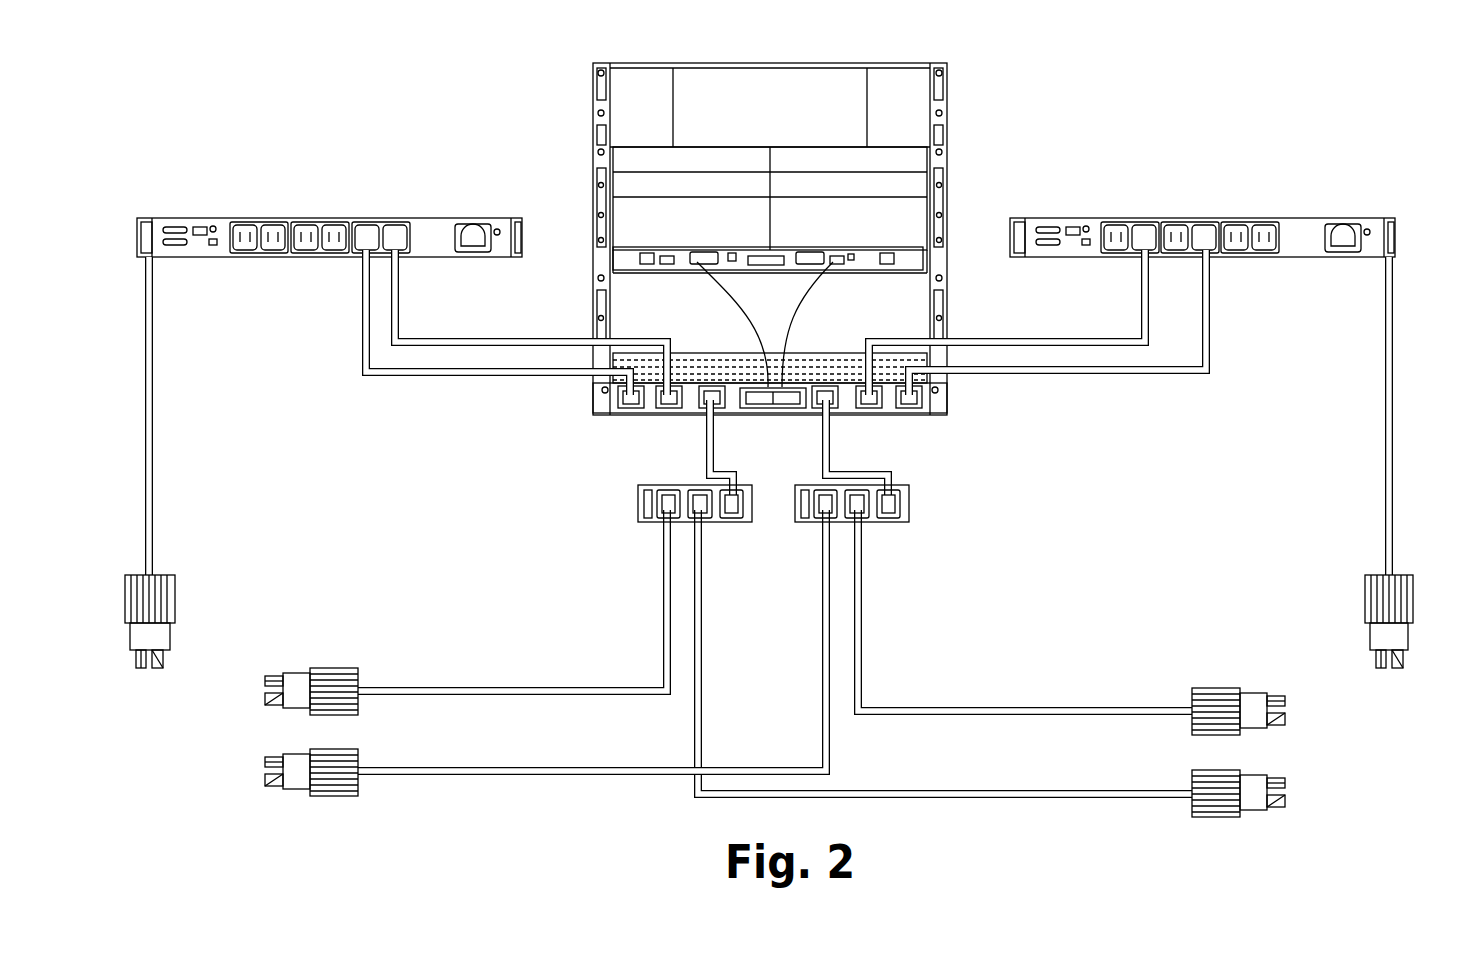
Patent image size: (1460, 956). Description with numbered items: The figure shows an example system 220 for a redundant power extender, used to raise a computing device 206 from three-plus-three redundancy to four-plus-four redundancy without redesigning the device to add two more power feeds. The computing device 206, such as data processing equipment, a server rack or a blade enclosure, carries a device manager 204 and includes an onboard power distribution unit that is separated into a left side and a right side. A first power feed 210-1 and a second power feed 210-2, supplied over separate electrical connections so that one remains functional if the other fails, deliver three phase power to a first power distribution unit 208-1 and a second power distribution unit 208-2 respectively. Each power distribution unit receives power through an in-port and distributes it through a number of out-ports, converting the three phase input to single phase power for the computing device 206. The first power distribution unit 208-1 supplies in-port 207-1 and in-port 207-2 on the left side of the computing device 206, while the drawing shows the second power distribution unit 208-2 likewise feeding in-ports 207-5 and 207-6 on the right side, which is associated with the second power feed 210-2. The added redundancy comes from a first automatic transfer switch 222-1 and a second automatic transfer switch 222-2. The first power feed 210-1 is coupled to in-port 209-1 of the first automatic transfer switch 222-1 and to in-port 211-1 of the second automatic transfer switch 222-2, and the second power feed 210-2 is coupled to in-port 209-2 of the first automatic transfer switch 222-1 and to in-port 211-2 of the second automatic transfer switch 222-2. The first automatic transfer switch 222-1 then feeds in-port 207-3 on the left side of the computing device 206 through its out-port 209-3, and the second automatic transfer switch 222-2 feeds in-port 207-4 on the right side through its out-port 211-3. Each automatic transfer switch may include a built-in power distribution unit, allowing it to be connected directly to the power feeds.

The system 220 is at (1094, 73).
The device manager 204 is at (947, 248).
The computing device 206 is at (947, 408).
The in-port 207-1 is at (625, 411).
The in-port 207-2 is at (668, 412).
The in-port 207-3 is at (712, 410).
The in-port 207-4 is at (823, 411).
The power inlet 207-5 is at (866, 384).
The power inlet 207-6 is at (908, 412).
The first power distribution unit 208-1 is at (299, 193).
The second power distribution unit 208-2 is at (1240, 193).
The in-port 209-1 is at (670, 524).
The in-port 209-2 is at (708, 524).
The out-port 209-3 is at (733, 524).
The first power feed 210-1 is at (158, 710).
The second power feed 210-2 is at (1376, 710).
The in-port 211-1 is at (803, 524).
The in-port 211-2 is at (866, 474).
The out-port 211-3 is at (888, 522).
The first automatic transfer switch 222-1 is at (638, 500).
The second automatic transfer switch 222-2 is at (908, 500).